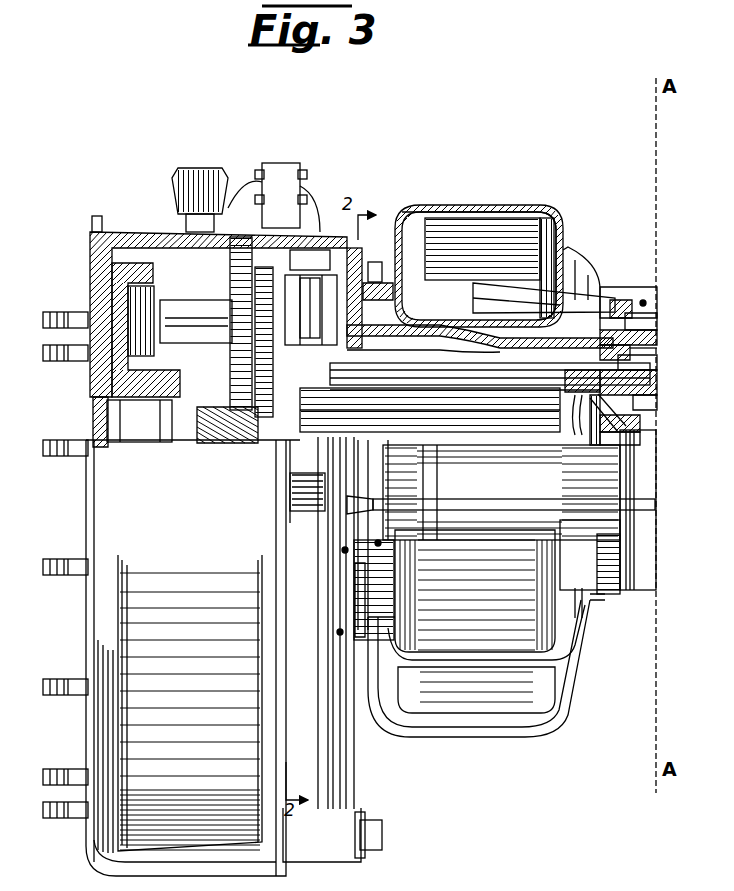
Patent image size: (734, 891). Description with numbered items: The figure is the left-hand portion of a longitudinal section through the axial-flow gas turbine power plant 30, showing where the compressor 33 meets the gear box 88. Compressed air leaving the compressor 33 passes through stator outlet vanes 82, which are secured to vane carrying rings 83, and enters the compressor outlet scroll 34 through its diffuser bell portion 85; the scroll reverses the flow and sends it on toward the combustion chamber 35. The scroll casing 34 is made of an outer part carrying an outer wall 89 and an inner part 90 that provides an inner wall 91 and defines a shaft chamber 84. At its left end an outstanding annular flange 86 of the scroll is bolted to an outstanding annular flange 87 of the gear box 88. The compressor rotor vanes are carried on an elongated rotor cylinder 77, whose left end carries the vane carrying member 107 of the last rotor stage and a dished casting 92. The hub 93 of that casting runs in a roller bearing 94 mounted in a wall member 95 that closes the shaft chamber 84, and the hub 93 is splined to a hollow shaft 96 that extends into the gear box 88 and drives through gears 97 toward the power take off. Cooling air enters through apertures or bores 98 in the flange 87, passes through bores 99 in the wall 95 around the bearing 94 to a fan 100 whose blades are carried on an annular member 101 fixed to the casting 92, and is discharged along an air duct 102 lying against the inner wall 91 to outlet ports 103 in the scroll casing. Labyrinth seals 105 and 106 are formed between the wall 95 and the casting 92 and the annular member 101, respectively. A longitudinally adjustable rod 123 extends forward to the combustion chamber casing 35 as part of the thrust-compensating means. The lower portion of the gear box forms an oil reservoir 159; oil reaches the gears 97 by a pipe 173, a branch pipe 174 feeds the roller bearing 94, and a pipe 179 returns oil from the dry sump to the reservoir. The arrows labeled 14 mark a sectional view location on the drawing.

The gas turbine power plant 30 is at (404, 152).
The compressor outlet scroll casing 34 is at (477, 206).
The combustion chamber 35 is at (472, 479).
The section line 14 is at (606, 261).
The axial type compressor 33 is at (621, 288).
The rotor cylinder 77 is at (640, 374).
The stator outlet vanes 82 is at (636, 323).
The vane carrying rings 83 is at (632, 312).
The shaft chamber 84 is at (423, 367).
The diffuser bell portion 85 is at (503, 295).
The annular flange 86 is at (372, 262).
The annular flange 87 is at (350, 596).
The gear box 88 is at (92, 508).
The outer wall 89 is at (541, 213).
The inner part 90 is at (426, 330).
The inner wall 91 is at (448, 336).
The dished casting 92 is at (620, 410).
The hub 93 is at (630, 435).
The roller bearing 94 is at (592, 440).
The wall member 95 is at (577, 436).
The hollow shaft 96 is at (468, 434).
The gears 97 is at (230, 355).
The apertures or bores 98 is at (310, 642).
The bores 99 is at (570, 366).
The fan 100 is at (640, 358).
The annular member 101 is at (676, 349).
The air duct 102 is at (485, 378).
The outlet ports 103 is at (418, 585).
The labyrinth seal 105 is at (648, 398).
The labyrinth seal 106 is at (615, 425).
The vane carrying member 107 is at (630, 350).
The longitudinally adjustable rod 123 is at (510, 502).
The oil reservoir 159 is at (212, 835).
The pipe 173 is at (345, 350).
The branch pipe 174 is at (372, 406).
The pipe 179 is at (390, 825).